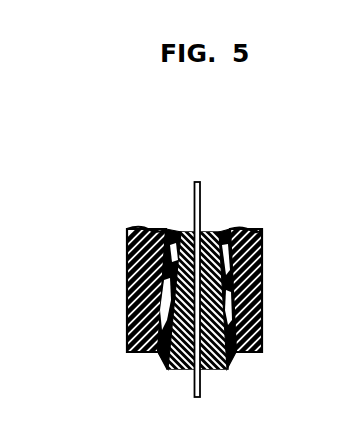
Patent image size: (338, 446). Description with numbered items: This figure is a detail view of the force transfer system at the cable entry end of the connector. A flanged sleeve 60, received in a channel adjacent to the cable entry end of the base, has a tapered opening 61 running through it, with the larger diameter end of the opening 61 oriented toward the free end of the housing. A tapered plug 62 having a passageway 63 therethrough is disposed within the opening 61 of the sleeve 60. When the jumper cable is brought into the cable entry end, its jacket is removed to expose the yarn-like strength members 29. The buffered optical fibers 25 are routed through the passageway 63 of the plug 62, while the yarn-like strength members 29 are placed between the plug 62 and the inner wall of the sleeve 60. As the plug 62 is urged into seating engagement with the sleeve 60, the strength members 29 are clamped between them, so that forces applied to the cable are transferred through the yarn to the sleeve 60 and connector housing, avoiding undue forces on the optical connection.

The buffered optical fibers 25 is at (203, 196).
The yarn-like strength members 29 is at (232, 370).
The flanged sleeve 60 is at (127, 263).
The tapered opening 61 is at (178, 230).
The tapered plug 62 is at (163, 370).
The passageway 63 is at (212, 236).